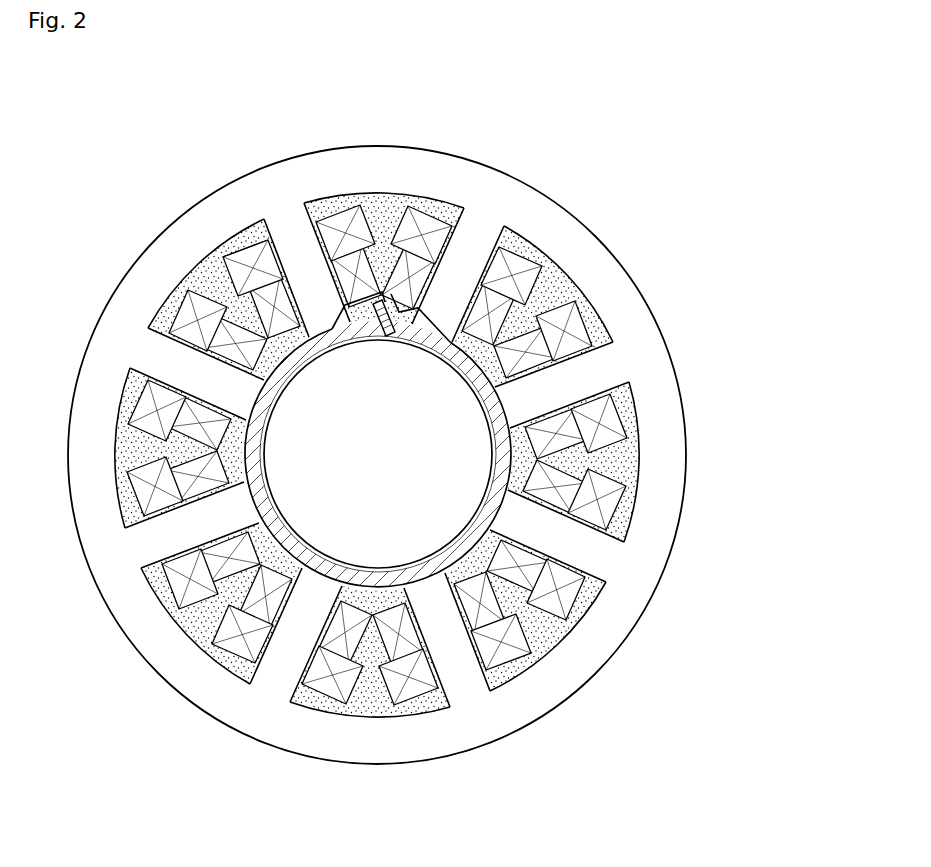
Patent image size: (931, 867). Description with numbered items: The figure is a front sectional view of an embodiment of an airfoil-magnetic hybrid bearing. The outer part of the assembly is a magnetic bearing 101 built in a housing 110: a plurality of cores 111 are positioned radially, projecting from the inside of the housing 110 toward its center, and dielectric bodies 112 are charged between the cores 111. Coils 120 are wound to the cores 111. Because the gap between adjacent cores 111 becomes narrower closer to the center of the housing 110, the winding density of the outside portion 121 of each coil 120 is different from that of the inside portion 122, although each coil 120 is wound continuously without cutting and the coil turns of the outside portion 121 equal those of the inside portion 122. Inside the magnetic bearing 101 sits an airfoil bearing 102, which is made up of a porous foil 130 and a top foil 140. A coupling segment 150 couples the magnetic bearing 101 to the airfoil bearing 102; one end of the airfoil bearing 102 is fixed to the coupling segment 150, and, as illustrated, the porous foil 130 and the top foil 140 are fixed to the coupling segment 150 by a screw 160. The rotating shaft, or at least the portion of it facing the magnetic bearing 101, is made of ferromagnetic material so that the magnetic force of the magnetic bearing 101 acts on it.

The magnetic bearing 101 is at (478, 454).
The airfoil bearing 102 is at (377, 402).
The housing 110 is at (444, 454).
The cores 111 is at (583, 376).
The dielectric bodies 112 is at (558, 295).
The coils 120 is at (474, 455).
The outside portion of the coil 121 is at (612, 423).
The inside portion of the coil 122 is at (605, 497).
The porous foil 130 is at (255, 237).
The top foil 140 is at (217, 245).
The coupling segment 150 is at (351, 317).
The screw 160 is at (369, 296).